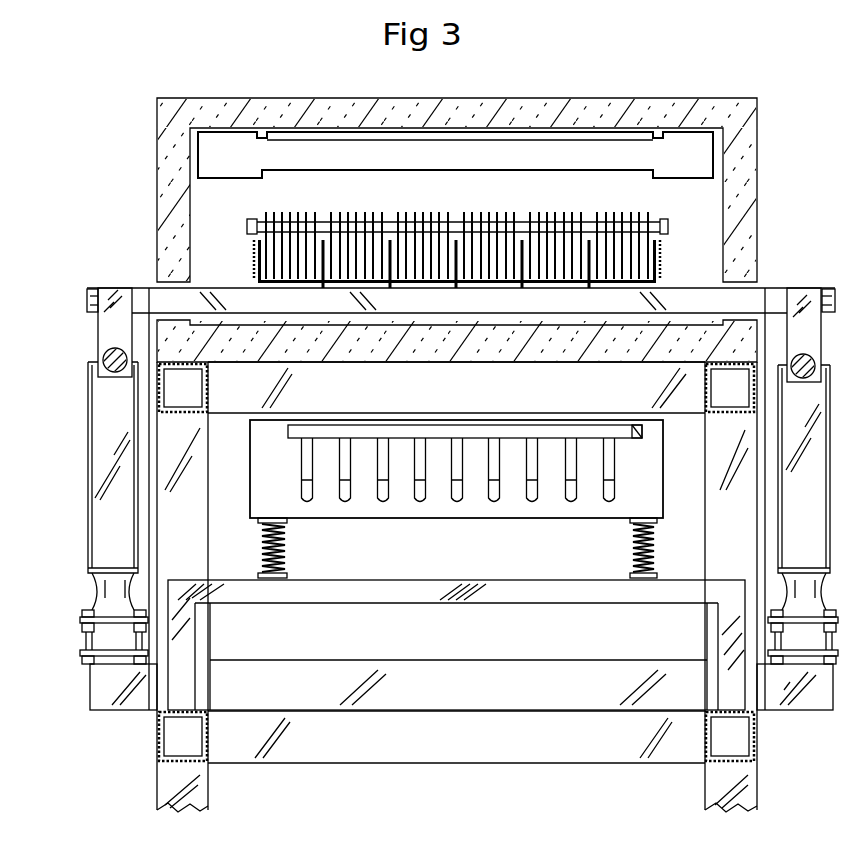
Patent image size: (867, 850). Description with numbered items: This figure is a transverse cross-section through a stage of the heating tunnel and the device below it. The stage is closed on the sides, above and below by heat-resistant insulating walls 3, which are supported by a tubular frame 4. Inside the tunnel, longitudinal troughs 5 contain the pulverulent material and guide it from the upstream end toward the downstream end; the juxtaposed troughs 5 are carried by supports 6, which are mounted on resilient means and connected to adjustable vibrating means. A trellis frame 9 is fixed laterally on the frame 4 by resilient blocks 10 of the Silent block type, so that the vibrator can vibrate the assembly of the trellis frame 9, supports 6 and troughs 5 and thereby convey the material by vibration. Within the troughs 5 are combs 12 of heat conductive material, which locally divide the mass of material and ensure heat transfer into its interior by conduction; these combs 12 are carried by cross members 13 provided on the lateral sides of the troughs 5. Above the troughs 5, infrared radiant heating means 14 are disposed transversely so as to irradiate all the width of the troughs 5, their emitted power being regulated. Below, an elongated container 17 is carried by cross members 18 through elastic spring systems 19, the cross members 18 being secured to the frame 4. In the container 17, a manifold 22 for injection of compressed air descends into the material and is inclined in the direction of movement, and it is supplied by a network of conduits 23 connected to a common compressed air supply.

The insulating wall 3 is at (583, 98).
The tubular frame 4 is at (188, 523).
The longitudinal trough 5 is at (453, 242).
The support 6 is at (673, 304).
The trellis frame 9 is at (84, 432).
The resilient block 10 is at (100, 588).
The comb 12 is at (549, 245).
The cross member 13 is at (322, 222).
The infrared radiant heating means 14 is at (380, 158).
The container 17 is at (437, 523).
The cross member 18 is at (528, 592).
The spring system 19 is at (287, 556).
The manifold 22 is at (607, 468).
The conduit 23 is at (640, 438).